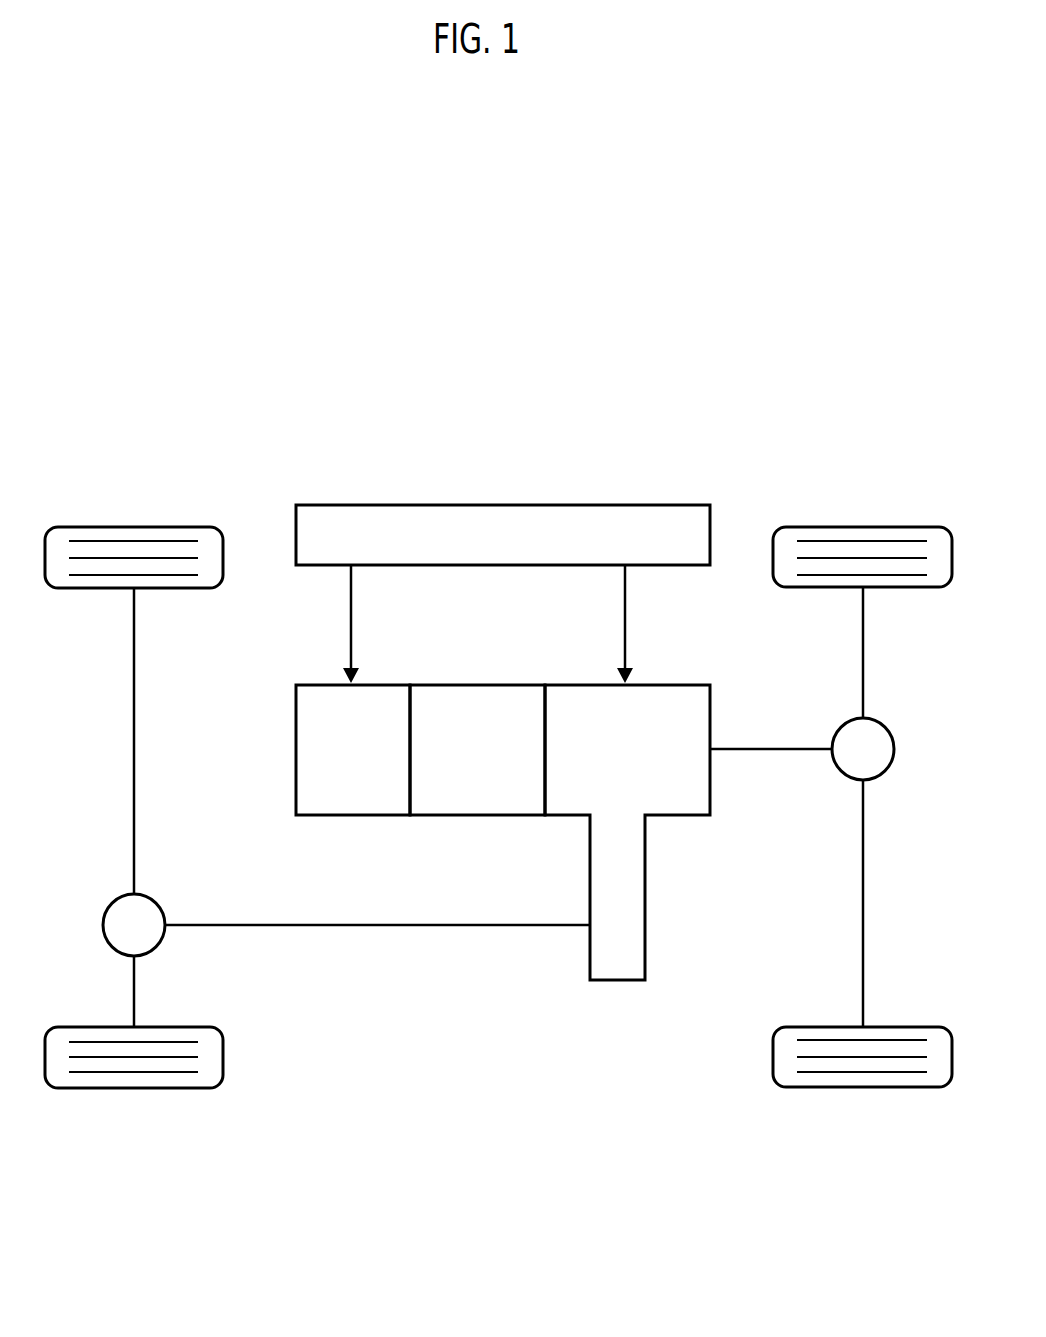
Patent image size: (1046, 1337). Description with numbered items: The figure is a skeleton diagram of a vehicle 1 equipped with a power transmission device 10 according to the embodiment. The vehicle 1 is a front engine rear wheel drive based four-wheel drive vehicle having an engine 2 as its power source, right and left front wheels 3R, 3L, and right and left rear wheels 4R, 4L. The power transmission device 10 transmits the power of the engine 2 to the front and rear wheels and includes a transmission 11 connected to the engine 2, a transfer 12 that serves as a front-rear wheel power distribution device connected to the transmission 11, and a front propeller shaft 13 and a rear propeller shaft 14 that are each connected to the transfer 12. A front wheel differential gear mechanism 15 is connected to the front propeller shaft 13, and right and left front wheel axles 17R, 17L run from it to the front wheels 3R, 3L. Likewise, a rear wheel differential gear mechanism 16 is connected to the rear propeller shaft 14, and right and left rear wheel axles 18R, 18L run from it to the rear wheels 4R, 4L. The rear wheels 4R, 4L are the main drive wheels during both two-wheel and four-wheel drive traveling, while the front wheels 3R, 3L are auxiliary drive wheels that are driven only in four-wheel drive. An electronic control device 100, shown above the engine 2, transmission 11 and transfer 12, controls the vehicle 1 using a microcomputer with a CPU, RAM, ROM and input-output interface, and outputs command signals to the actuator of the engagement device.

The vehicle 1 is at (637, 392).
The electronic control device 100 is at (521, 505).
The engine 2 is at (350, 818).
The transmission 11 is at (452, 818).
The transfer 12 is at (680, 818).
The front propeller shaft 13 is at (385, 928).
The rear propeller shaft 14 is at (762, 754).
The front wheel differential gear mechanism 15 is at (103, 920).
The rear wheel differential gear mechanism 16 is at (895, 745).
The right front wheel axle 17R is at (133, 710).
The left front wheel axle 17L is at (133, 990).
The right rear wheel axle 18R is at (863, 644).
The left rear wheel axle 18L is at (863, 843).
The right front wheel 3R is at (128, 527).
The left front wheel 3L is at (118, 1090).
The right rear wheel 4R is at (825, 527).
The left rear wheel 4L is at (838, 1090).
The power transmission device 10 is at (486, 1026).